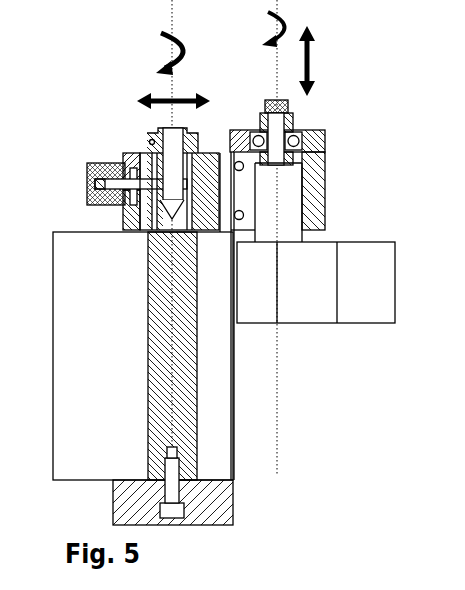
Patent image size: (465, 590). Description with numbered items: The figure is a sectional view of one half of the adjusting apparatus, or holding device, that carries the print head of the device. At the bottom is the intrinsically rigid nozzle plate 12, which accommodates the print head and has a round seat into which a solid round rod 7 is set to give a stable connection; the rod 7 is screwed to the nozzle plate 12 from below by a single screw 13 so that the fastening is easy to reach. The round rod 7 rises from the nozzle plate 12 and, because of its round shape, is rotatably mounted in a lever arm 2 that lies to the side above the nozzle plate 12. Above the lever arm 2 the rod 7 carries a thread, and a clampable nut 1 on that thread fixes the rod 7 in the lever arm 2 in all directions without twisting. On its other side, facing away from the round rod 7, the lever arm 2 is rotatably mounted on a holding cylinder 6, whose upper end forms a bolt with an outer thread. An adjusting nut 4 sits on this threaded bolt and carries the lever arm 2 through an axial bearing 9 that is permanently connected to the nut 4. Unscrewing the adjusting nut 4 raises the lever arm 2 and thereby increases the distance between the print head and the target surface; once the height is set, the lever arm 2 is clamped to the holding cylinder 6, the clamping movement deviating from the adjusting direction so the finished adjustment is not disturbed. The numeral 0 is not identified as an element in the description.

The upper clamping collar 0 is at (122, 153).
The clampable nut 1 is at (88, 165).
The round rod 7 is at (122, 225).
The adjusting nut 4 is at (292, 107).
The axial bearing 9 is at (327, 142).
The lever arm 2 is at (312, 178).
The holding cylinder 6 is at (283, 198).
The nozzle plate 12 is at (215, 500).
The screw 13 is at (187, 480).